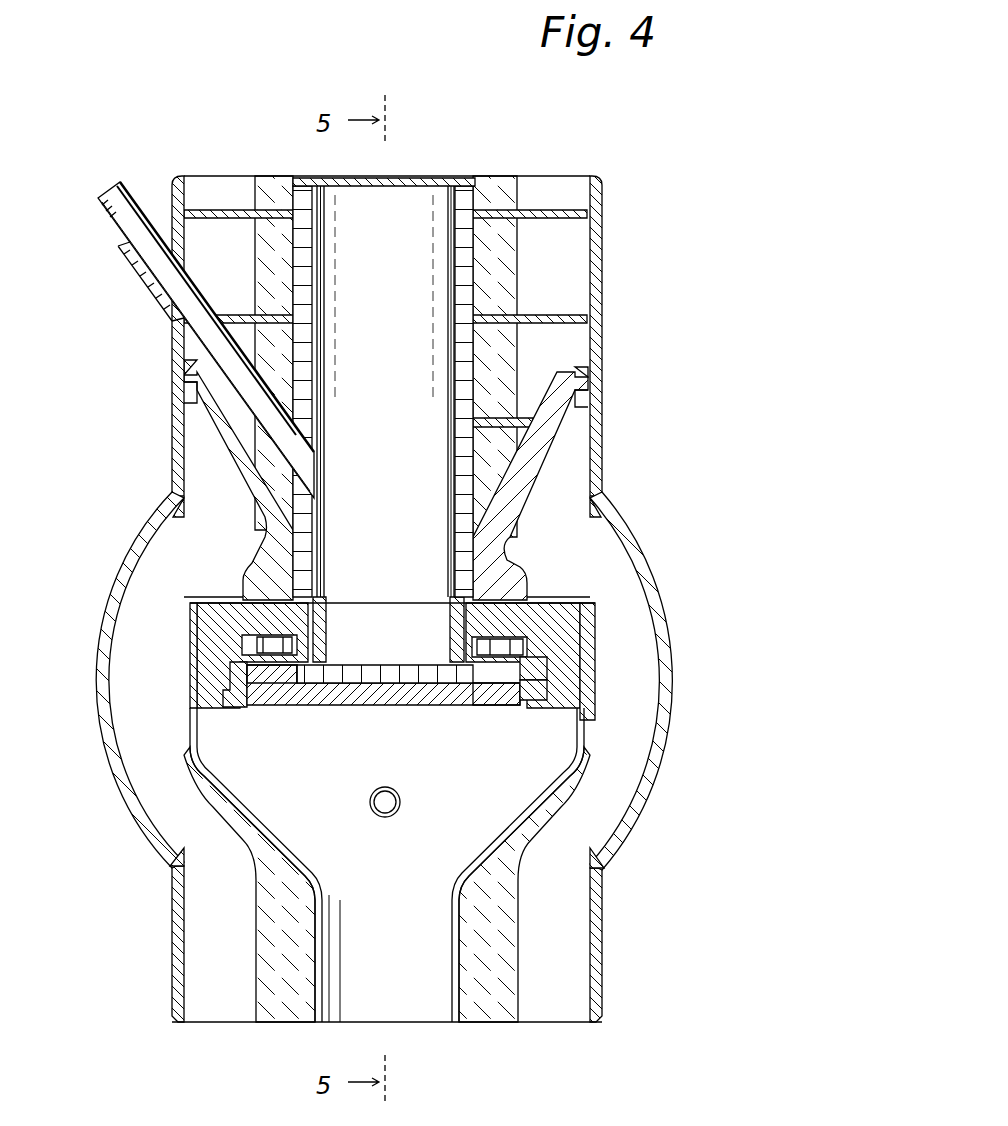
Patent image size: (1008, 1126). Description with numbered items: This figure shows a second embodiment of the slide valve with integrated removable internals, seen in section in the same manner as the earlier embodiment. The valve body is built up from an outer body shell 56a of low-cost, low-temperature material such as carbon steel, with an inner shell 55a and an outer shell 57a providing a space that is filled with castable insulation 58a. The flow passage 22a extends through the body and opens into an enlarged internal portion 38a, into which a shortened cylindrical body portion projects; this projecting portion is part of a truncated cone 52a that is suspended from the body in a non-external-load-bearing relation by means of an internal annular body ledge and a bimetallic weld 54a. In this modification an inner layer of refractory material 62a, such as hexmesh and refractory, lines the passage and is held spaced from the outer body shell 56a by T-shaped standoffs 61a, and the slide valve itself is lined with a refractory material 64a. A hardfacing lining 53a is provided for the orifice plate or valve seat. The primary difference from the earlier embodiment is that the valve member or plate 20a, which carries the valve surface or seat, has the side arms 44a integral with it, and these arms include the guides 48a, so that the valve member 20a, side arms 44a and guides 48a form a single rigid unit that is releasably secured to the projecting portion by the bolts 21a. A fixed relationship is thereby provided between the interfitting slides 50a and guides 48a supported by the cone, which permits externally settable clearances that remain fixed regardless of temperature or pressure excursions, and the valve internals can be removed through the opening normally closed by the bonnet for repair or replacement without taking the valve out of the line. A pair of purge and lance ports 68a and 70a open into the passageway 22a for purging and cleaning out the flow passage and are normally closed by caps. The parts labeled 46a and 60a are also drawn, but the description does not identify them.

The valve member 20a is at (325, 622).
The bolts 21a is at (293, 641).
The flow passage 22a is at (406, 400).
The enlarged internal portion 38a is at (212, 767).
The side arms 44a is at (283, 581).
The gasket 46a is at (277, 686).
The valve guides 48a is at (556, 699).
The slides 50a is at (548, 688).
The truncated cone 52a is at (555, 437).
The valve seat lining 53a is at (583, 397).
The bimetallic weld 54a is at (588, 373).
The inner shell 55a is at (558, 778).
The outer body shell 56a is at (178, 193).
The outer shell 57a is at (648, 591).
The insulation 58a is at (180, 548).
The refractory liner 60a is at (277, 362).
The T-shaped standoffs 61a is at (218, 210).
The inner layer of refractory material 62a is at (307, 305).
The refractory lining of slide valve 64a is at (410, 679).
The purge and lance port 68a is at (172, 288).
The purge and lance port 70a is at (402, 806).